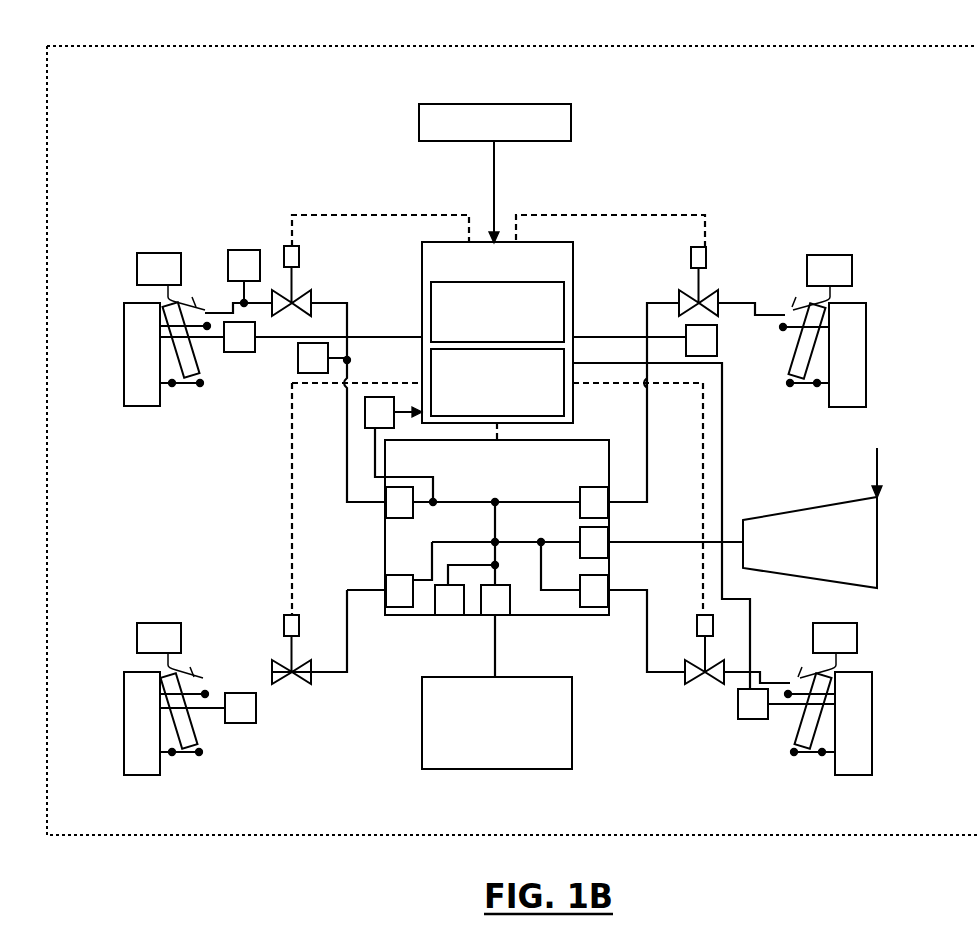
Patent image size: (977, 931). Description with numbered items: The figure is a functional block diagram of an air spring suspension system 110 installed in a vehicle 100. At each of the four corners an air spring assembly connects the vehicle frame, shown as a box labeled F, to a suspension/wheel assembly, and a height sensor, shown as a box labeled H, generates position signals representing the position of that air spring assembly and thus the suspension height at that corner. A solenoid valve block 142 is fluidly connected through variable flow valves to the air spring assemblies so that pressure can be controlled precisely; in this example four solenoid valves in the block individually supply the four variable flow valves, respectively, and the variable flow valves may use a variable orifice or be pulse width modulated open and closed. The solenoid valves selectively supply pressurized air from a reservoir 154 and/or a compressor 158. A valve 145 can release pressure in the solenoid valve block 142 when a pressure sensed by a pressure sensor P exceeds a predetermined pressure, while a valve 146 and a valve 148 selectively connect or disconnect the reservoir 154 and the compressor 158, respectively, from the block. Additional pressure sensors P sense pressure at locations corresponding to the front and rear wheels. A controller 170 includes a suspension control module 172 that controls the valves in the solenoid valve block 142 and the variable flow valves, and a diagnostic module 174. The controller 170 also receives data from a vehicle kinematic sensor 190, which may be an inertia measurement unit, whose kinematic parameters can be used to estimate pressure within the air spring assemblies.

The vehicle 100 is at (70, 46).
The air spring suspension system 110 is at (121, 236).
The solenoid valve block 142 is at (414, 615).
The valve 145 is at (449, 615).
The valve 146 is at (510, 606).
The valve 148 is at (600, 558).
The reservoir 154 is at (473, 769).
The compressor 158 is at (842, 583).
The controller 170 is at (499, 332).
The suspension control module 172 is at (431, 303).
The diagnostic module 174 is at (431, 363).
The vehicle kinematic sensor 190 is at (537, 104).